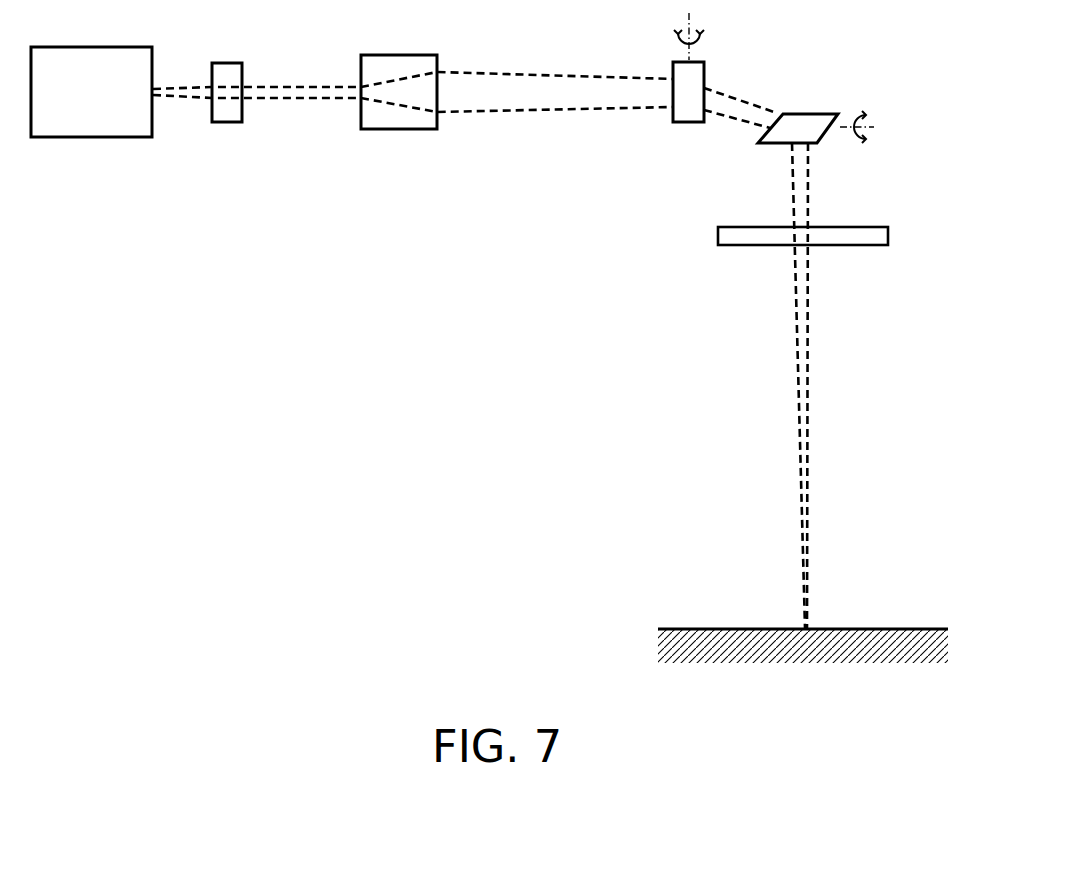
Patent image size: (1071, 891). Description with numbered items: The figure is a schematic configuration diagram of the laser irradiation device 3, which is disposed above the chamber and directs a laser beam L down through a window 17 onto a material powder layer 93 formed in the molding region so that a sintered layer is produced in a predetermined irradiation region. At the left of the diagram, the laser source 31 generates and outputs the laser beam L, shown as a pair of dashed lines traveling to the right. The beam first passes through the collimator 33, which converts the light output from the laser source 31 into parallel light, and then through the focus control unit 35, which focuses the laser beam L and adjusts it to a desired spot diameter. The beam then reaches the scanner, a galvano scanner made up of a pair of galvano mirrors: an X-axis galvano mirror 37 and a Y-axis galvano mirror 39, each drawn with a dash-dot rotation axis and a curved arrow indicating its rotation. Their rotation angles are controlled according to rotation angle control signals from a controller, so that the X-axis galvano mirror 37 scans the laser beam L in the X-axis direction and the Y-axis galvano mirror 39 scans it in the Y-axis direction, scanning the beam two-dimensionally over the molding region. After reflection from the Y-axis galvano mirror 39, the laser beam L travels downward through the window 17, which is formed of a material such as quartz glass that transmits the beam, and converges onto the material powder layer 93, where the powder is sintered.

The laser irradiation device 3 is at (385, 293).
The laser source 31 is at (61, 130).
The collimator 33 is at (233, 118).
The focus control unit 35 is at (372, 122).
The X-axis galvano mirror 37 is at (685, 117).
The Y-axis galvano mirror 39 is at (820, 118).
The window 17 is at (733, 234).
The laser beam L is at (807, 407).
The material powder layer 93 is at (709, 638).